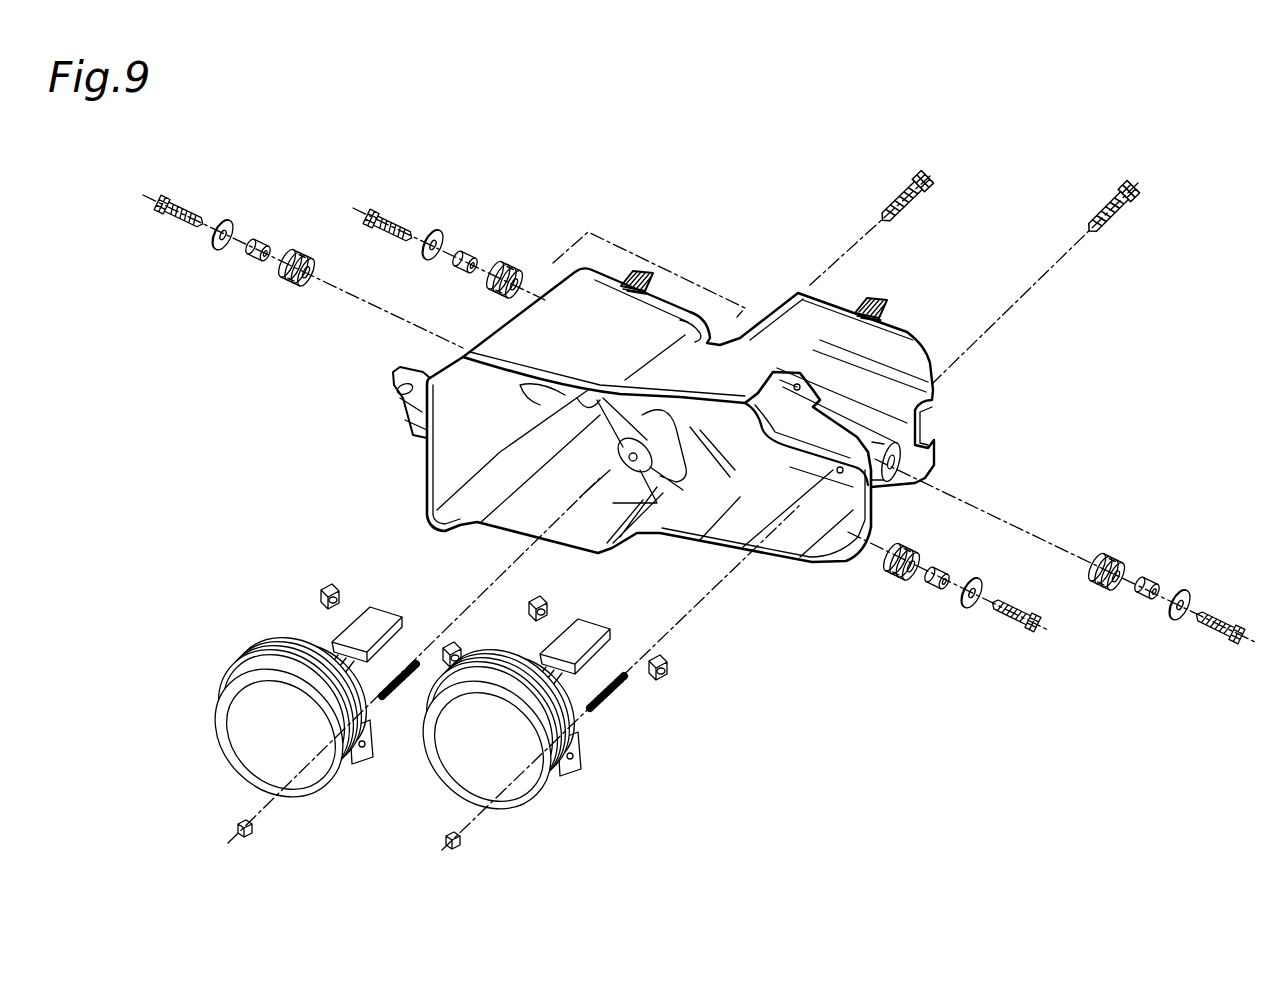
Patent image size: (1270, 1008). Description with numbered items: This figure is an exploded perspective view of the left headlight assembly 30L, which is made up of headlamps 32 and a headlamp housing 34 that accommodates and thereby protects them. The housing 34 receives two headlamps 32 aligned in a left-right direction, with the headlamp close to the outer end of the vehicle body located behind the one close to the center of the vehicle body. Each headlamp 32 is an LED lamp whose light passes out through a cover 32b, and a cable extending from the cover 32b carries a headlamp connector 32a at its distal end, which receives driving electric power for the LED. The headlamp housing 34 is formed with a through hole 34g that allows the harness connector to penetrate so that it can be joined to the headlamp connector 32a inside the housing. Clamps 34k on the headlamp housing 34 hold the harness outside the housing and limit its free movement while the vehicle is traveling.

The headlight assembly 30L is at (655, 208).
The headlamp 32 is at (480, 664).
The headlamp connector 32a is at (378, 625).
The cover 32b is at (250, 745).
The headlamp housing 34 is at (427, 470).
The clamp 34k is at (645, 270).
The through hole 34g is at (938, 418).